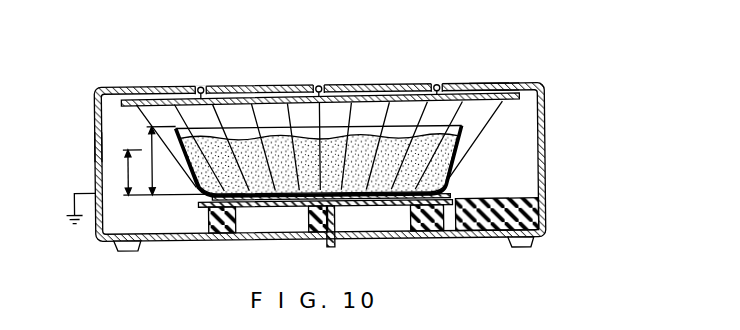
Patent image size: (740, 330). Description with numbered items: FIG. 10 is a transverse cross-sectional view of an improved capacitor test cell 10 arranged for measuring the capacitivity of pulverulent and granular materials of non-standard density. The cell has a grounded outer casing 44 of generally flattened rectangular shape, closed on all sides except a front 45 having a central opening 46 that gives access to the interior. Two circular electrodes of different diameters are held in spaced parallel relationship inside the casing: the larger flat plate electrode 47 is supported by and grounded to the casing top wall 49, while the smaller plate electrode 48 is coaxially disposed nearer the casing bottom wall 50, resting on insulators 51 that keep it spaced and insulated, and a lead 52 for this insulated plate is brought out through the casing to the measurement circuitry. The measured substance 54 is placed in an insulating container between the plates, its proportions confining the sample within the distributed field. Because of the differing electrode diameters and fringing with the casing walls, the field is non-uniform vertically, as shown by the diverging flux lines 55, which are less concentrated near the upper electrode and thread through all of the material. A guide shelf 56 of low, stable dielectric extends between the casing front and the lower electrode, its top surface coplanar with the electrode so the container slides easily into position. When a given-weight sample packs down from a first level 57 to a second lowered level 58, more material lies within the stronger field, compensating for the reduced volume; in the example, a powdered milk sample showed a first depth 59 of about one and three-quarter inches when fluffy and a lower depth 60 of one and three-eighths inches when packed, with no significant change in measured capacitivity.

The furnace assembly 10 is at (230, 67).
The outer casing 44 is at (97, 144).
The front 45 is at (536, 192).
The central opening 46 is at (546, 132).
The larger flat plate electrode 47 is at (362, 96).
The smaller plate electrode 48 is at (393, 207).
The casing top wall 49 is at (492, 84).
The casing bottom wall 50 is at (177, 240).
The insulators 51 is at (222, 239).
The lead 52 is at (330, 248).
The measured substance 54 is at (270, 136).
The flux lines 55 is at (461, 144).
The guide shelf 56 is at (514, 201).
The first level 57 is at (162, 125).
The second lowered level 58 is at (138, 146).
The first depth 59 is at (126, 165).
The lower depth 60 is at (152, 160).